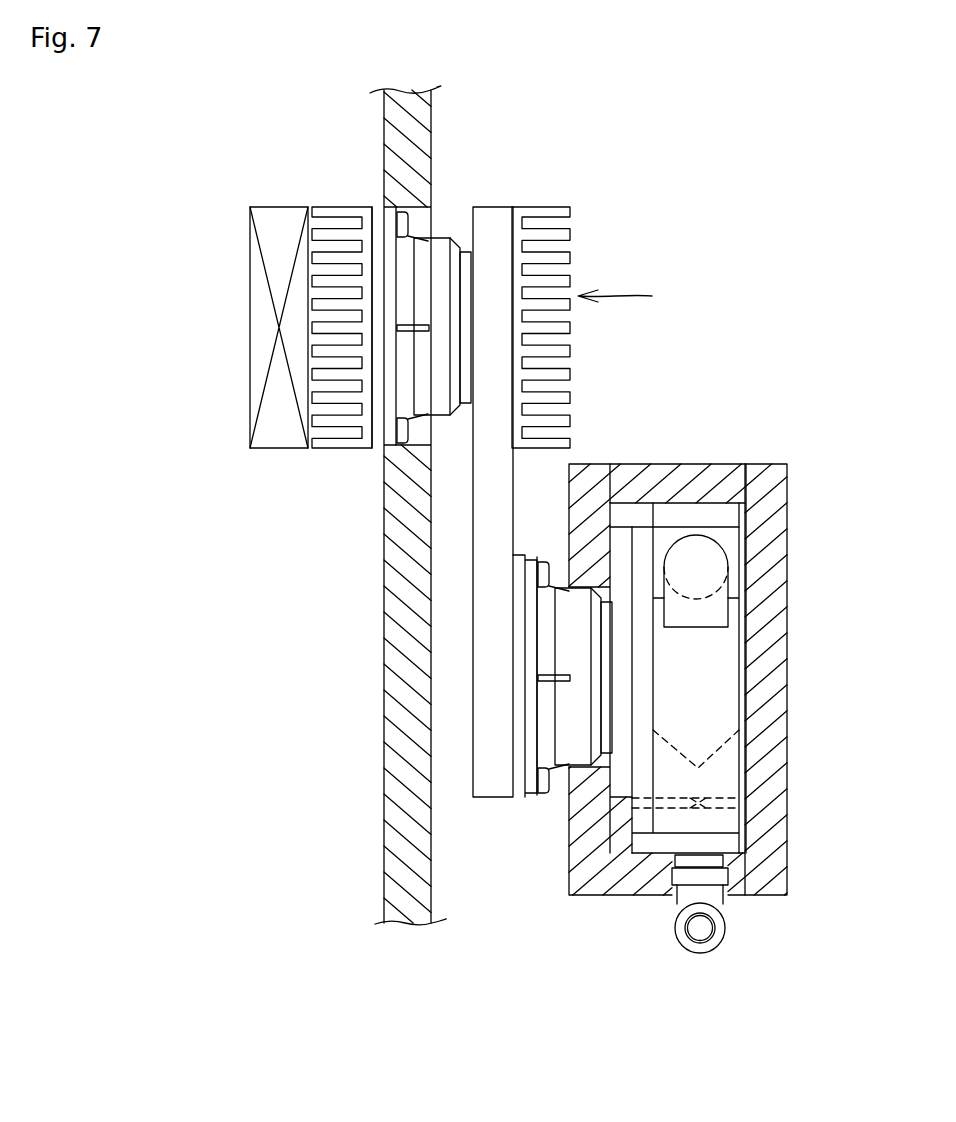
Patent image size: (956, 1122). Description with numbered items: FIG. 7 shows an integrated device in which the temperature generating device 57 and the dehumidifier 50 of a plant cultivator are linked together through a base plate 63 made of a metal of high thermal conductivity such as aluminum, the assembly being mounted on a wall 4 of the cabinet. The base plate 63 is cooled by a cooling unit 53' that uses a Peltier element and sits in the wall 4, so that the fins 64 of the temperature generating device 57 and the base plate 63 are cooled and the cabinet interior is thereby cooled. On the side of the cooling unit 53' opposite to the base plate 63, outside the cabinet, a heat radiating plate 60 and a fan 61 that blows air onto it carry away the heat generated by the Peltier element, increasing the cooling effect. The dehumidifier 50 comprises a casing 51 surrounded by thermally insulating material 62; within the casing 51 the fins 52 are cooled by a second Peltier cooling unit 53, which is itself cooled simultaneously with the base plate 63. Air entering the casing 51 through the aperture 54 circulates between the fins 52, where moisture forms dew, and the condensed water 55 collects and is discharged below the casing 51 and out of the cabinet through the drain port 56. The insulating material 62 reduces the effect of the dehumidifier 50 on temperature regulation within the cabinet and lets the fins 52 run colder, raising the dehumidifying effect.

The partition wall 4 is at (400, 552).
The dehumidifier 50 is at (722, 661).
The casing 51 is at (705, 512).
The fins 52 is at (727, 667).
The cooling unit 53 is at (562, 709).
The cooling unit 53' is at (441, 286).
The aperture 54 is at (715, 568).
The drain hole 55 is at (703, 795).
The drain port 56 is at (723, 928).
The temperature generating device 57 is at (633, 296).
The heat radiating plate 60 is at (338, 207).
The fan 61 is at (250, 270).
The thermally insulating material 62 is at (768, 828).
The base plate 63 is at (487, 790).
The fins 64 is at (525, 207).